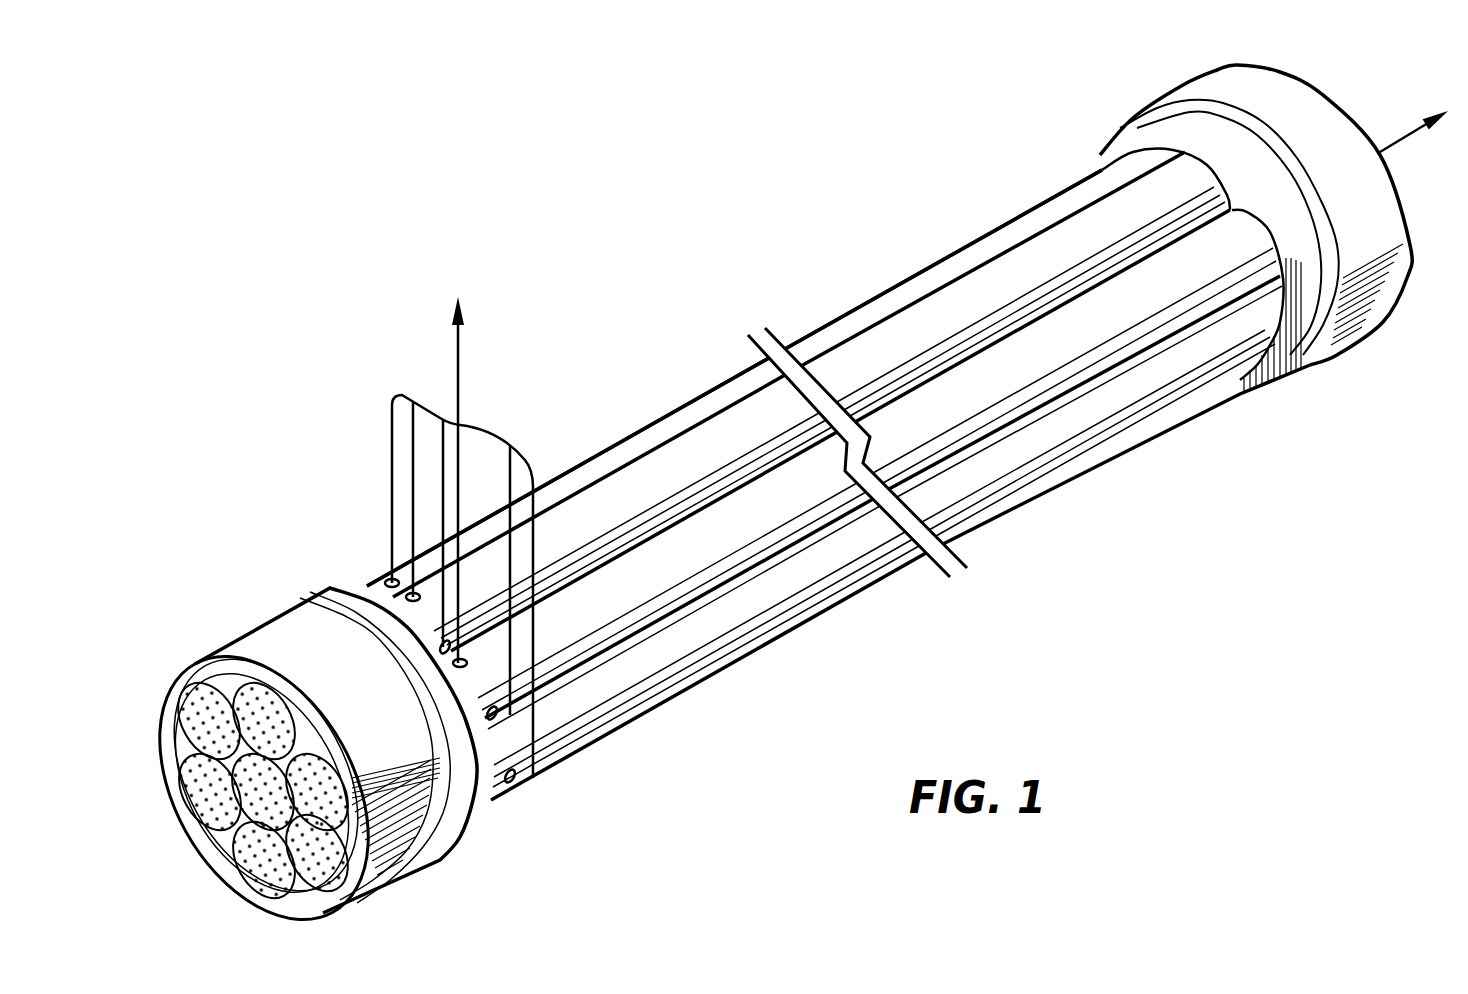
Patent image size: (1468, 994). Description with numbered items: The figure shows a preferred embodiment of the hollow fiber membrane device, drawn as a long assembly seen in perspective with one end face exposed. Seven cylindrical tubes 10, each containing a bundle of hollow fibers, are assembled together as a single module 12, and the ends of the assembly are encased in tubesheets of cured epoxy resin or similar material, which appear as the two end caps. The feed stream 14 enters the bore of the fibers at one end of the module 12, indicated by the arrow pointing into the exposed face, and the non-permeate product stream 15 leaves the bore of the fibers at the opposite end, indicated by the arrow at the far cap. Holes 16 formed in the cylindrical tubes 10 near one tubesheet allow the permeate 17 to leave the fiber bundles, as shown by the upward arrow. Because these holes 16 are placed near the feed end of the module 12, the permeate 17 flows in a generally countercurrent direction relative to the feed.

The cylindrical tubes 10 is at (790, 515).
The module 12 is at (800, 338).
The feed stream 14 is at (245, 800).
The non-permeate product stream 15 is at (1413, 119).
The holes 16 is at (484, 795).
The permeate 17 is at (460, 453).